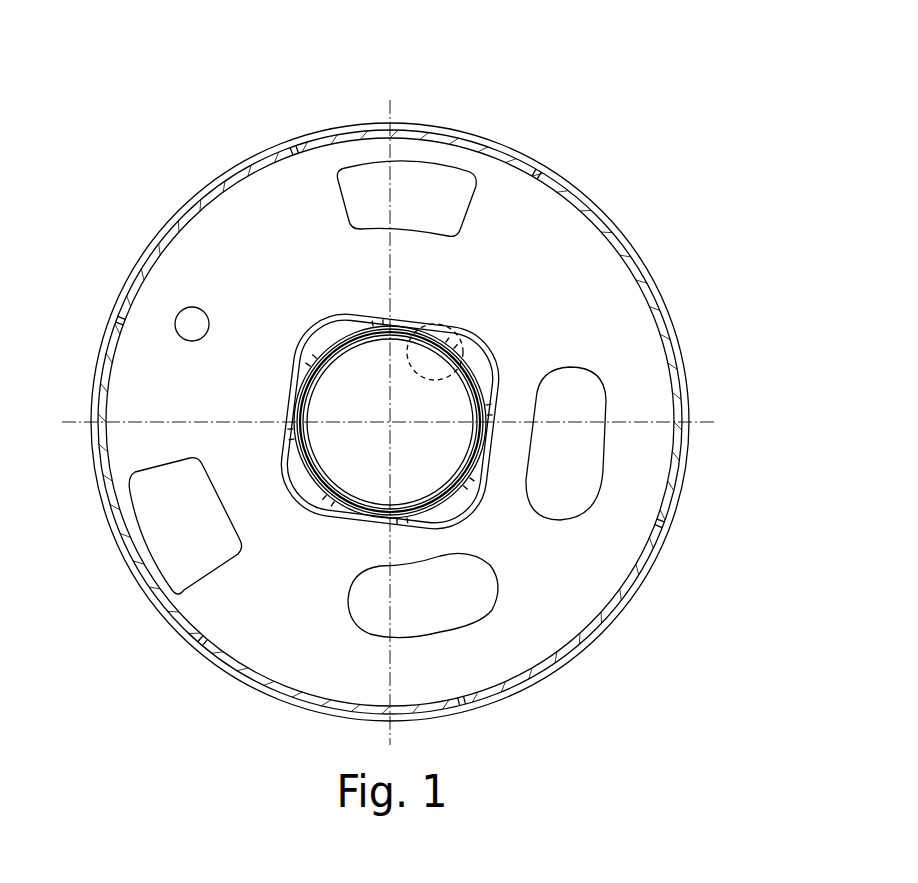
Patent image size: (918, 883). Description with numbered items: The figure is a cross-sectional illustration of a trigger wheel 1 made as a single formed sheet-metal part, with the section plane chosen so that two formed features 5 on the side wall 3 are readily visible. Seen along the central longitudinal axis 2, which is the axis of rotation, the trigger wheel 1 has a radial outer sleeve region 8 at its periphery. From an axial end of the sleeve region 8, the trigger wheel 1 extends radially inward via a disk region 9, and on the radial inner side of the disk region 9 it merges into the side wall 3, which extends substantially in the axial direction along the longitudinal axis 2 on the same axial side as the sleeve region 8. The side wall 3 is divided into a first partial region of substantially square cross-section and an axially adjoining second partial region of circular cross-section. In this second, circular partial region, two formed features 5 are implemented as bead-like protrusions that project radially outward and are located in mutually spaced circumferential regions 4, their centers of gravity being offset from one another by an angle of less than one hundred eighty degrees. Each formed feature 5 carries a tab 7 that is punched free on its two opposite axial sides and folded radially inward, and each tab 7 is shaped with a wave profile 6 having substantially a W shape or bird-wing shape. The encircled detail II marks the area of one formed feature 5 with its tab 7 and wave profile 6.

The trigger wheel 1 is at (599, 102).
The central longitudinal axis 2 is at (426, 370).
The side wall 3 is at (485, 403).
The circumferential regions 4 is at (440, 320).
The formed feature 5 is at (445, 338).
The wave profile 6 is at (458, 386).
The tab 7 is at (456, 333).
The sleeve region 8 is at (654, 277).
The disk region 9 is at (630, 319).
The detail region II is at (457, 324).